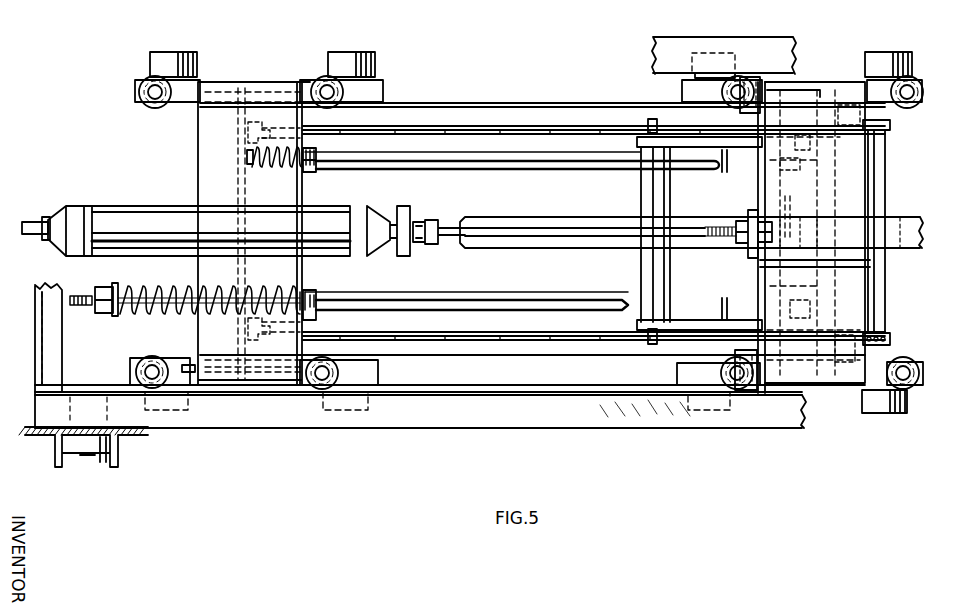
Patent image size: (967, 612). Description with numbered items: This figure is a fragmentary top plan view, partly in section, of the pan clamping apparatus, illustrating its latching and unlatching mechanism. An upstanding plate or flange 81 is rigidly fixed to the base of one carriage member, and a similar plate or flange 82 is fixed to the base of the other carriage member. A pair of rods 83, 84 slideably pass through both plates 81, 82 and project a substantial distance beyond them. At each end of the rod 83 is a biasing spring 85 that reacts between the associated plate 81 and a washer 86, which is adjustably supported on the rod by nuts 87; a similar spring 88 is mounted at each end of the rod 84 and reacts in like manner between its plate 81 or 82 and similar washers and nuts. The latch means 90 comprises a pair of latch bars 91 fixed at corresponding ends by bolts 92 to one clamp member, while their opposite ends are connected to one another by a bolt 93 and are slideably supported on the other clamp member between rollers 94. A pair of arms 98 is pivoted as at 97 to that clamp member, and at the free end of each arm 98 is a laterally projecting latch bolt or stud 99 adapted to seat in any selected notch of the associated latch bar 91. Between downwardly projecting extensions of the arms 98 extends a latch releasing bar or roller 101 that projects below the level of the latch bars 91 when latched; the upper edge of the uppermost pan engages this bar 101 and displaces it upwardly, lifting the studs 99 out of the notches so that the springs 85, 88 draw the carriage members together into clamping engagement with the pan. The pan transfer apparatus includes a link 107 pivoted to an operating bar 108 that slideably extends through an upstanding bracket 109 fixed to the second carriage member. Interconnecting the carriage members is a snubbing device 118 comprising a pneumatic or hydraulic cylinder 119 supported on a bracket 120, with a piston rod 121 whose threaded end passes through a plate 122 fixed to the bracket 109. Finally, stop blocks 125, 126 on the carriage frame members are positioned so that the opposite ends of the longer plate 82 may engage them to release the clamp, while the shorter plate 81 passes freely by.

The upstanding plate or flange 81 is at (305, 178).
The plate or flange 82 is at (760, 188).
The rod 83 is at (471, 299).
The rod 84 is at (520, 167).
The biasing spring 85 is at (172, 316).
The washer 86 is at (112, 316).
The nuts 87 is at (112, 290).
The spring 88 is at (271, 169).
The latch means 90 is at (618, 343).
The latch bar 91 is at (340, 137).
The bolt 92 is at (237, 144).
The bolt 93 is at (881, 295).
The rollers 94 is at (847, 337).
The pivot 97 is at (792, 196).
The arm 98 is at (679, 318).
The latch bolt or stud 99 is at (646, 120).
The latch releasing bar or roller 101 is at (650, 264).
The link 107 is at (900, 229).
The operating bar 108 is at (577, 217).
The upstanding bracket 109 is at (778, 264).
The snubbing device 118 is at (52, 201).
The pneumatic or hydraulic cylinder 119 is at (127, 214).
The bracket 120 is at (147, 198).
The piston rod 121 is at (455, 244).
The plate 122 is at (748, 258).
The stop block 125 is at (737, 354).
The stop block 126 is at (738, 110).